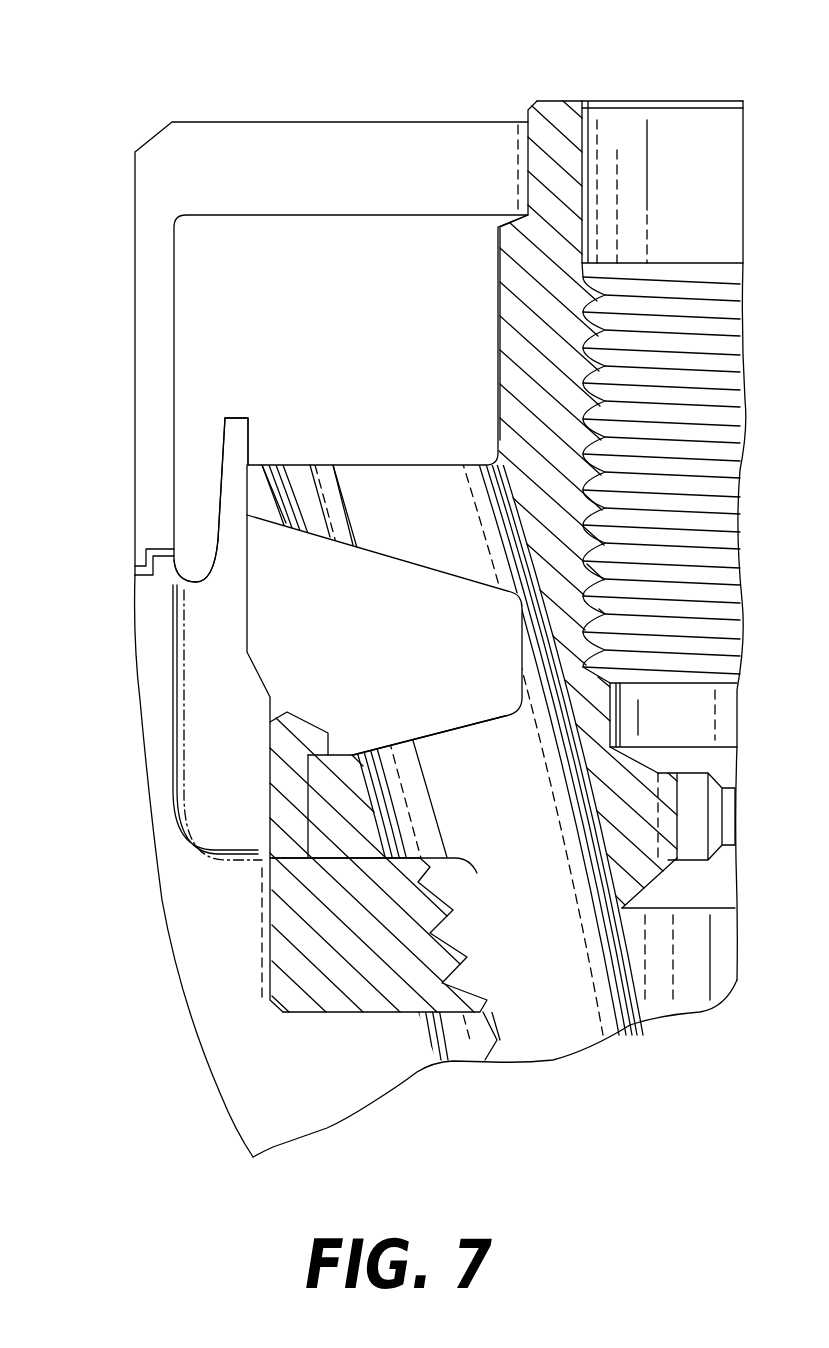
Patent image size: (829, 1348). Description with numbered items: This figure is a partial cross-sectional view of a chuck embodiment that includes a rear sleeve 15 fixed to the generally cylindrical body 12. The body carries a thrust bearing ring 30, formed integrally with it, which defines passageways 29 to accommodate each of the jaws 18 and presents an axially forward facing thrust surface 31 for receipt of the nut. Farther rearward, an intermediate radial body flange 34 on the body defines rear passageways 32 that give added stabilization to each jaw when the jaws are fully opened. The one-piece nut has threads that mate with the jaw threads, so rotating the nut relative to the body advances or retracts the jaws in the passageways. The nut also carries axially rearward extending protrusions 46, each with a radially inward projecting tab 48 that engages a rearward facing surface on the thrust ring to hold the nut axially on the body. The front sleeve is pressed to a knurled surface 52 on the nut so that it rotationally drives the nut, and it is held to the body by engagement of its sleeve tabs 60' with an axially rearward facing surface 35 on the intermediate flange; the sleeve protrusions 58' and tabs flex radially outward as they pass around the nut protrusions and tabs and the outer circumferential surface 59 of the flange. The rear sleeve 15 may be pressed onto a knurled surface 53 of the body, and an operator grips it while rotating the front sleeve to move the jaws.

The body 12 is at (548, 100).
The rear sleeve 15 is at (135, 198).
The jaws 18 is at (423, 892).
The passageways 29 is at (420, 742).
The thrust bearing ring 30 is at (275, 820).
The thrust surface 31 is at (305, 880).
The rear passageways 32 is at (400, 562).
The intermediate radial body flange 34 is at (292, 497).
The axially rearward facing surface 35 is at (275, 463).
The protrusions 46 is at (280, 785).
The tabs 48 is at (337, 732).
The knurled surface 52 is at (262, 965).
The knurled surface 53 is at (516, 140).
The sleeve protrusions 58' is at (146, 535).
The outer circumferential surface 59 is at (247, 489).
The tabs 60' is at (277, 411).